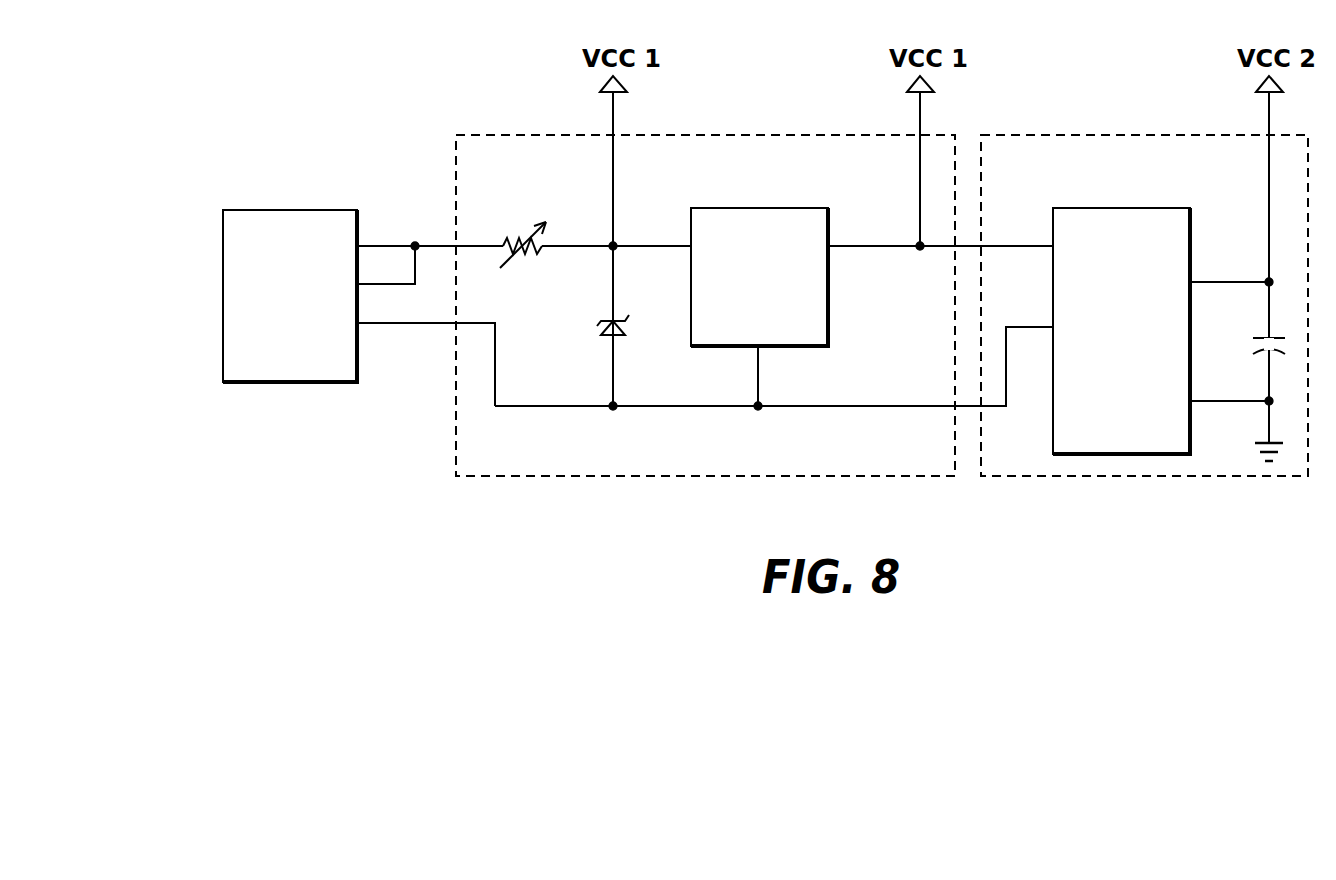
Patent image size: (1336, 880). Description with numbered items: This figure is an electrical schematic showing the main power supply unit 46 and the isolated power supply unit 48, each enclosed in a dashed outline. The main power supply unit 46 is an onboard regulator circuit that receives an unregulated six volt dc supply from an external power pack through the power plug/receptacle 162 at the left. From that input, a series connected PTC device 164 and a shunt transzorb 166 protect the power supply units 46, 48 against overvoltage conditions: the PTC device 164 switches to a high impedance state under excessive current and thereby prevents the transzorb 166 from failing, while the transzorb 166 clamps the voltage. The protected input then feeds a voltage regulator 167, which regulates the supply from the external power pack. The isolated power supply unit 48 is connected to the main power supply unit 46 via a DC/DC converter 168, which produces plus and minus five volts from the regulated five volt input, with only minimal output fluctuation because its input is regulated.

The main power supply unit 46 is at (842, 478).
The isolated power supply unit 48 is at (1070, 133).
The power plug/receptacle 162 is at (323, 210).
The PTC device 164 is at (518, 234).
The transzorb 166 is at (605, 338).
The voltage regulator 167 is at (795, 208).
The DC/DC converter 168 is at (1100, 456).